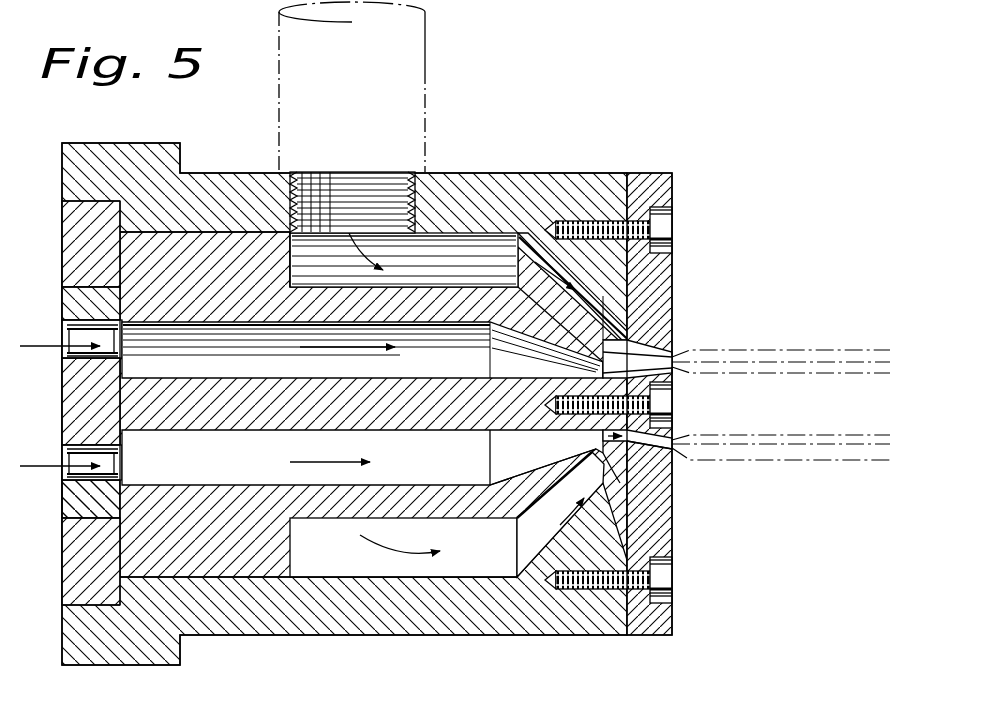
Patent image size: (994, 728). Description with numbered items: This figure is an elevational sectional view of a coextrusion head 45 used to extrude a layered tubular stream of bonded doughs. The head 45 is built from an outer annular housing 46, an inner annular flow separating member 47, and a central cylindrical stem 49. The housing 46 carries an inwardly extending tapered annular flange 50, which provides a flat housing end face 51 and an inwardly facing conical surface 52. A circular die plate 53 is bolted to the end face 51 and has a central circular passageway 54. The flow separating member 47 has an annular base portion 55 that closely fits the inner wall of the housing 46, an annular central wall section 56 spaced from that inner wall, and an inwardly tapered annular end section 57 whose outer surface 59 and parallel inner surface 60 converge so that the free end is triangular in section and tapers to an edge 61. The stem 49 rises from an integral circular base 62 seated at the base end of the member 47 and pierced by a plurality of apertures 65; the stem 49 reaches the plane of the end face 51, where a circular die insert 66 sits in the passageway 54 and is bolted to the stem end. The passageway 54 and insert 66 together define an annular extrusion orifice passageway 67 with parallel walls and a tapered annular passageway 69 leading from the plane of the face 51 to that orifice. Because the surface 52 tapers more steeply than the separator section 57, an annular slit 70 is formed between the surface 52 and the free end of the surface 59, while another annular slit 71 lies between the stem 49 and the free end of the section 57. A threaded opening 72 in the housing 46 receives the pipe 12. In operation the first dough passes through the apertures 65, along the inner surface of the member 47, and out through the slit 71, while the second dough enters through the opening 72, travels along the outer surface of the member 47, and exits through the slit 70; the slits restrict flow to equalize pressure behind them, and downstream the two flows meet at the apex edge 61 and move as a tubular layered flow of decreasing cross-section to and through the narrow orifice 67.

The pipe 12 is at (428, 46).
The coextrusion head 45 is at (375, 376).
The outer annular housing 46 is at (344, 393).
The inner annular flow separating member 47 is at (426, 279).
The central cylindrical stem 49 is at (252, 428).
The tapered annular flange 50 is at (612, 292).
The housing end face 51 is at (632, 202).
The conical surface 52 is at (630, 308).
The circular die plate 53 is at (652, 174).
The central circular passageway 54 is at (672, 340).
The annular base portion 55 is at (80, 241).
The annular central wall section 56 is at (395, 300).
The inwardly tapered annular end section 57 is at (478, 330).
The outer surface 59 is at (672, 240).
The inner surface 60 is at (507, 323).
The apex edge 61 is at (628, 455).
The circular base 62 is at (61, 303).
The apertures 65 is at (77, 352).
The circular die insert 66 is at (673, 362).
The annular extrusion orifice passageway 67 is at (673, 443).
The tapered annular passageway 69 is at (680, 452).
The annular slit 70 is at (606, 466).
The annular slit 71 is at (595, 447).
The threaded opening 72 is at (303, 172).